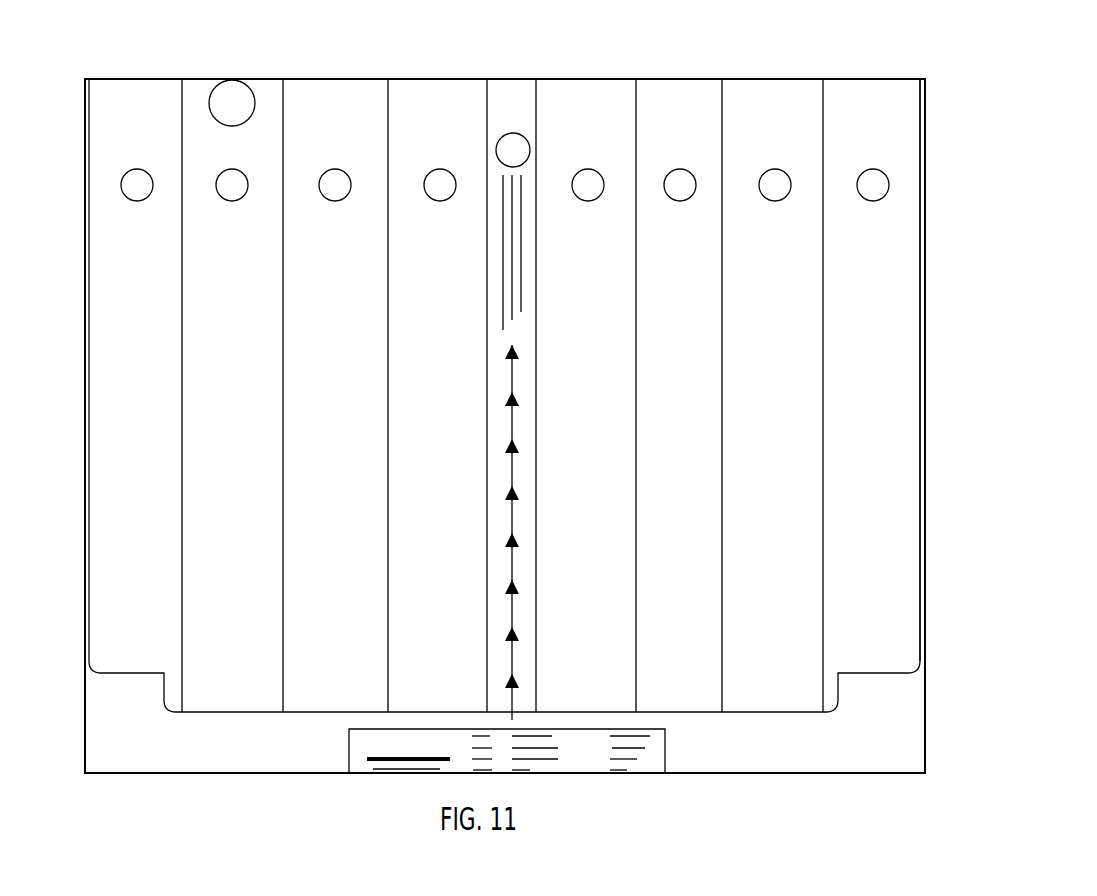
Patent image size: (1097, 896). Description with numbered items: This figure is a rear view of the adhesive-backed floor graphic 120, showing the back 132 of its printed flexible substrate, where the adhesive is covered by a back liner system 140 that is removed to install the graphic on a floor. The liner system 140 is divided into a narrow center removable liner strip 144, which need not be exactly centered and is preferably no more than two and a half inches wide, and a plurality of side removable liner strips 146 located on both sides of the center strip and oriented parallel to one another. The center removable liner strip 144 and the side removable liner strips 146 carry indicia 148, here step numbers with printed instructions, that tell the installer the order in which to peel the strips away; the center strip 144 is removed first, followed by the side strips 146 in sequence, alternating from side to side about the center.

The adhesive-backed floor graphic 120 is at (726, 59).
The back 132 is at (907, 345).
The back liner system 140 is at (98, 410).
The center removable liner strip 144 is at (510, 95).
The side removable liner strips 146 is at (505, 440).
The indicia 148 is at (505, 108).